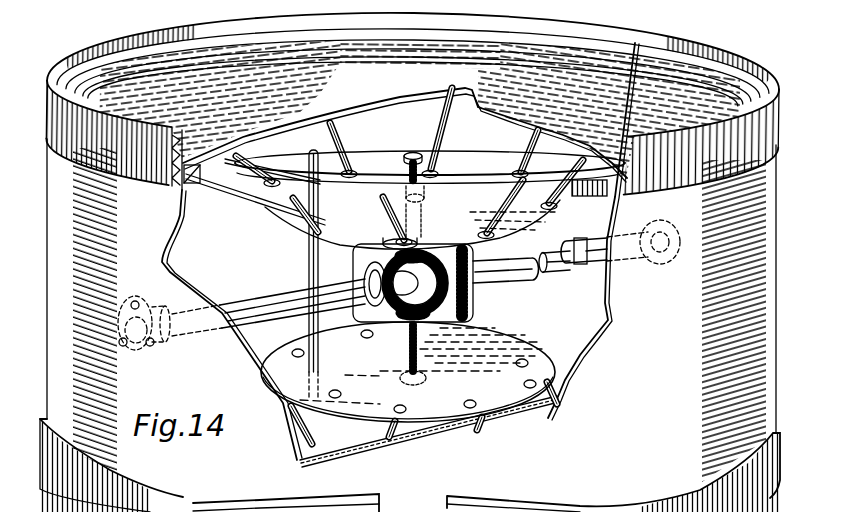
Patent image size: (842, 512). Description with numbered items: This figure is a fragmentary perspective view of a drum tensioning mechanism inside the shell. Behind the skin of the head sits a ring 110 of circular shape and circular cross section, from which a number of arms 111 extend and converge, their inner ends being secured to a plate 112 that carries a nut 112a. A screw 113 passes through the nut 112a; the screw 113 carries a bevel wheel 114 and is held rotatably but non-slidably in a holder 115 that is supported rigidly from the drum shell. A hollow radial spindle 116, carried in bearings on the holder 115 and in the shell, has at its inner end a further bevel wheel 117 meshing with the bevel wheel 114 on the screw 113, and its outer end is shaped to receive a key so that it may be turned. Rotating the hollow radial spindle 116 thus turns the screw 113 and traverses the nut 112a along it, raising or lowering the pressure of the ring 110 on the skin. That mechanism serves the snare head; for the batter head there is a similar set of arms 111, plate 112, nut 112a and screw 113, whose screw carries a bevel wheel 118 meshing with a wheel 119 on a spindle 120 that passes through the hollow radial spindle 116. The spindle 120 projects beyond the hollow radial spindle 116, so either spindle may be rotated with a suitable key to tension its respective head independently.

The ring 110 is at (287, 173).
The arms 111 is at (430, 130).
The plate 112 is at (372, 192).
The nut 112a is at (432, 199).
The screw 113 is at (425, 156).
The bevel wheel 114 is at (420, 339).
The holder 115 is at (357, 274).
The hollow radial spindle 116 is at (596, 248).
The bevel wheel 117 is at (463, 292).
The bevel wheel 118 is at (390, 246).
The wheel 119 is at (473, 267).
The spindle 120 is at (560, 268).